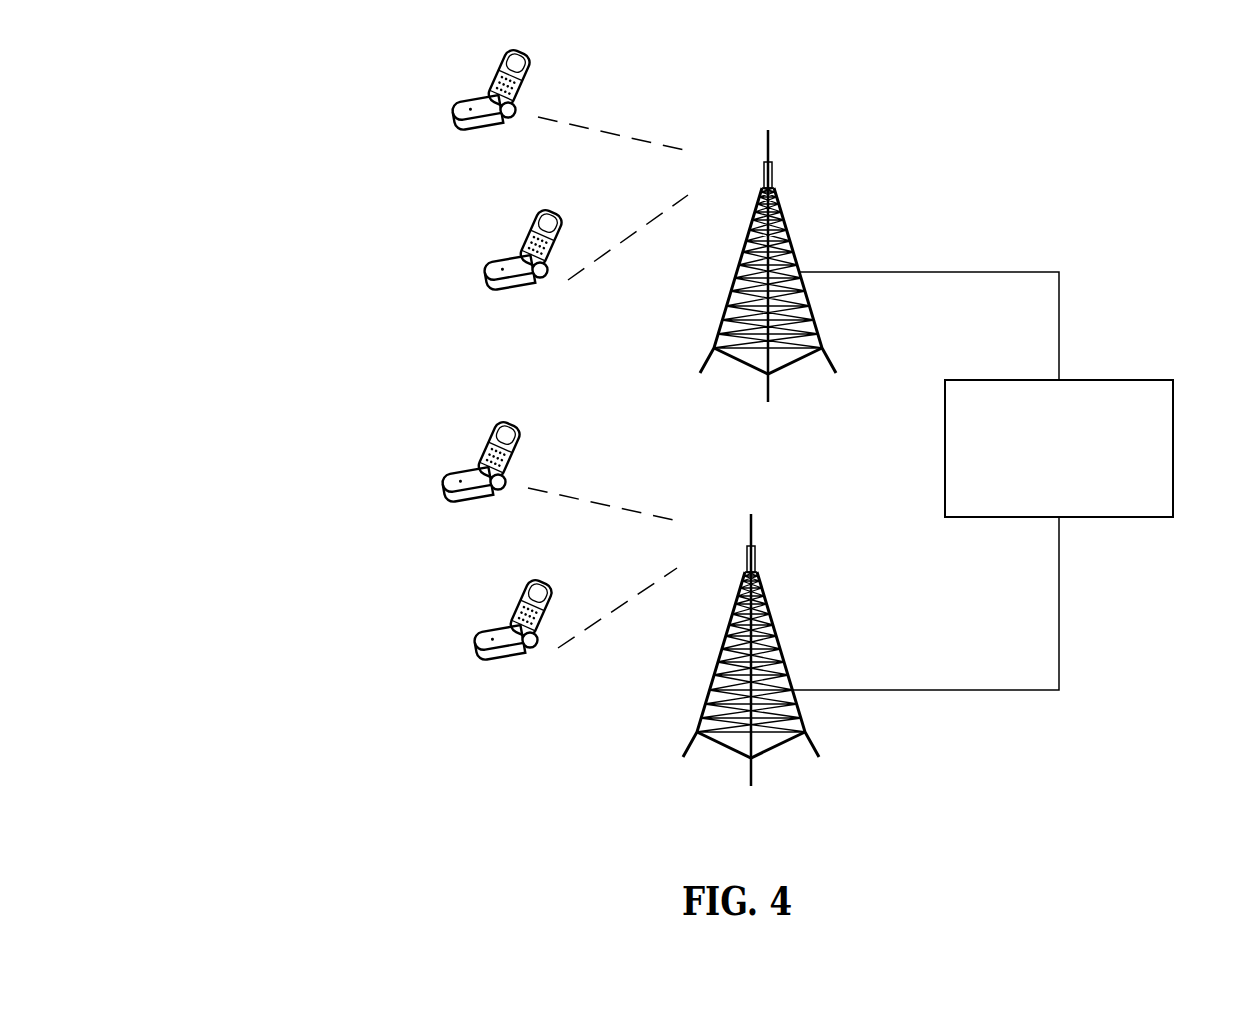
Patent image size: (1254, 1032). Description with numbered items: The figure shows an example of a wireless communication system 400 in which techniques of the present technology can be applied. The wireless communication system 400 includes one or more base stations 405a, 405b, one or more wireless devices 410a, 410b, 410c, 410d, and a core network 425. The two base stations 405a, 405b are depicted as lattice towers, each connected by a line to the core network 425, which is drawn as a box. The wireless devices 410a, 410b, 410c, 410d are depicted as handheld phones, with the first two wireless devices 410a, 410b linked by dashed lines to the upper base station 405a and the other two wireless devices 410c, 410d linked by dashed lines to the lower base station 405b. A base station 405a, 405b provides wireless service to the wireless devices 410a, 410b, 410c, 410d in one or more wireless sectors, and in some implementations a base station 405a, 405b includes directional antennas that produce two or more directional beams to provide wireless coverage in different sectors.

The wireless communication system 400 is at (330, 187).
The base station 405a is at (790, 271).
The base station 405b is at (772, 660).
The wireless device 410a is at (572, 89).
The wireless device 410b is at (585, 231).
The wireless device 410c is at (562, 455).
The wireless device 410d is at (575, 605).
The core network 425 is at (983, 481).